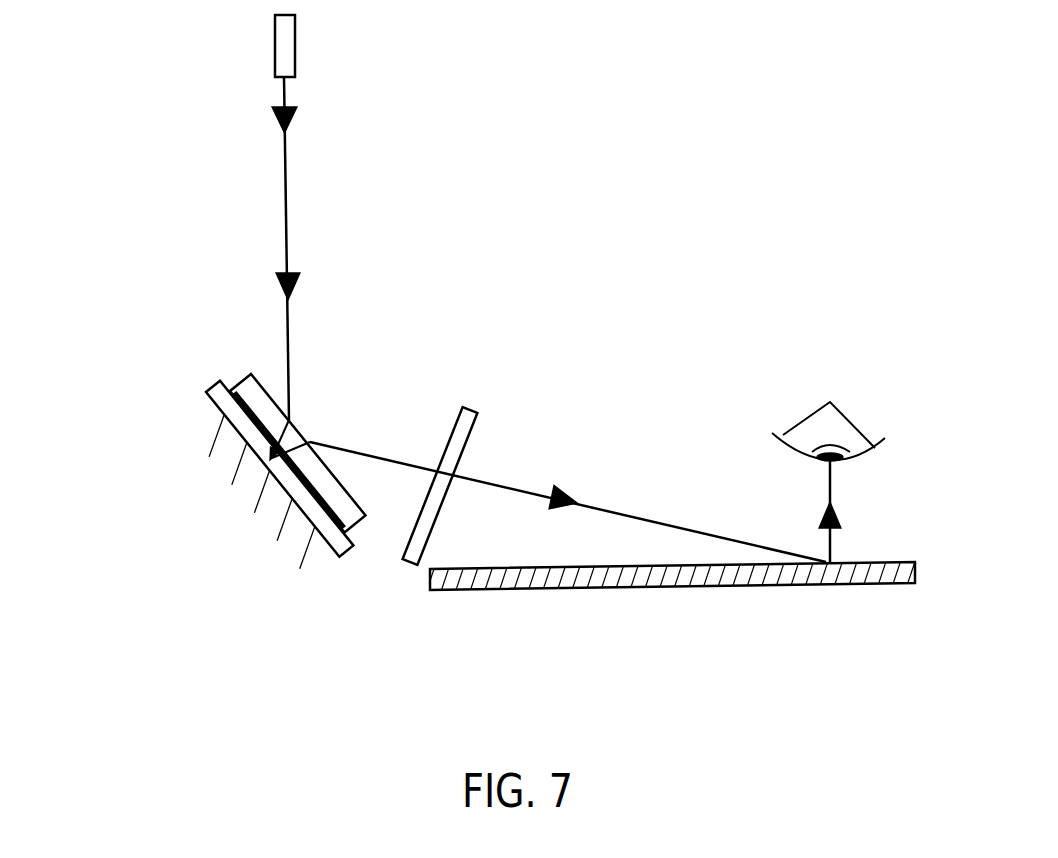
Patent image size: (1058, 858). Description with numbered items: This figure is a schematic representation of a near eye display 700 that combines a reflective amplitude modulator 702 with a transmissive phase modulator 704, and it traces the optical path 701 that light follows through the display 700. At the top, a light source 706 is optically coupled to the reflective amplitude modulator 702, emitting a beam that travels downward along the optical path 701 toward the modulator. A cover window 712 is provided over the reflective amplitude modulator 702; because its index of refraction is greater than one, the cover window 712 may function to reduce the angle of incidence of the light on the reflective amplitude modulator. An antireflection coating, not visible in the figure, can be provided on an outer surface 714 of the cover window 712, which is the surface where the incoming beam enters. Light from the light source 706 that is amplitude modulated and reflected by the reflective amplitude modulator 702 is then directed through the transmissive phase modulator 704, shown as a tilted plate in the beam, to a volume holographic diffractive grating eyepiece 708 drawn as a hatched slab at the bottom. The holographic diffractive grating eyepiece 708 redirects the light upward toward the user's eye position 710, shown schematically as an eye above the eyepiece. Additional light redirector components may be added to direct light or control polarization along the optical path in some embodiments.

The near eye display 700 is at (596, 22).
The optical path 701 is at (289, 257).
The reflective amplitude modulator 702 is at (205, 392).
The transmissive phase modulator 704 is at (468, 408).
The light source 706 is at (296, 24).
The volume holographic diffractive grating eyepiece 708 is at (537, 590).
The user's eye position 710 is at (855, 455).
The cover window 712 is at (240, 383).
The outer surface of the cover window 714 is at (304, 424).